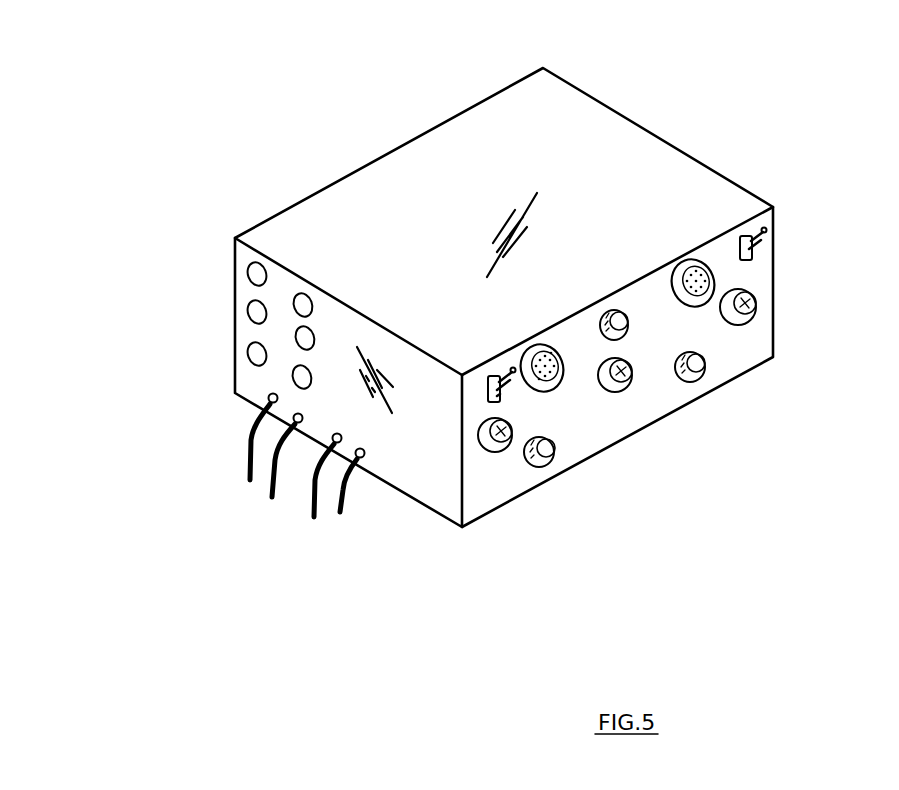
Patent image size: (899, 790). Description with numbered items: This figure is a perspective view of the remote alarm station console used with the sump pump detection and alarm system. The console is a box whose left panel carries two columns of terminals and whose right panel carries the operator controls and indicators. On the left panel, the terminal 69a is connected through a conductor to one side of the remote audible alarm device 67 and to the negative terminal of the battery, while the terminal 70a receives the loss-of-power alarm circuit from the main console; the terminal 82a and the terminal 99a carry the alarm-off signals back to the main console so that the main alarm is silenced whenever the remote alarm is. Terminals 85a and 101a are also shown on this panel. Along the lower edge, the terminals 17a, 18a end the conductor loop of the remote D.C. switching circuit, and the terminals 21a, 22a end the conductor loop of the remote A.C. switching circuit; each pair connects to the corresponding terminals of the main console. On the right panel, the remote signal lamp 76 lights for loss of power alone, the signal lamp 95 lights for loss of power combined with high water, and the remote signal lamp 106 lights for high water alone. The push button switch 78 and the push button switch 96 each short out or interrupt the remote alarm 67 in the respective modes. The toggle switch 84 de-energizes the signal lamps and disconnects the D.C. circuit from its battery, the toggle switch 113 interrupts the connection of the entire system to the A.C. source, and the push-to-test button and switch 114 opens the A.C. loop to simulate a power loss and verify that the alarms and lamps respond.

The terminal 70a is at (307, 367).
The terminal 99a is at (310, 330).
The terminal 82a is at (309, 300).
The opening 85a is at (246, 274).
The opening 101a is at (246, 311).
The terminal 69a is at (246, 353).
The terminal 18a is at (250, 478).
The terminal 17a is at (278, 473).
The terminal 22a is at (319, 476).
The terminal 21a is at (343, 500).
The toggle switch 84 is at (499, 378).
The remote audible alarm device 67 is at (546, 346).
The push-to-test button and switch 114 is at (621, 308).
The toggle switch 113 is at (706, 270).
The remote signal lamp 76 is at (755, 292).
The push button switch 78 is at (707, 367).
The signal lamp 95 is at (637, 380).
The remote signal lamp 106 is at (490, 450).
The push button switch 96 is at (560, 453).